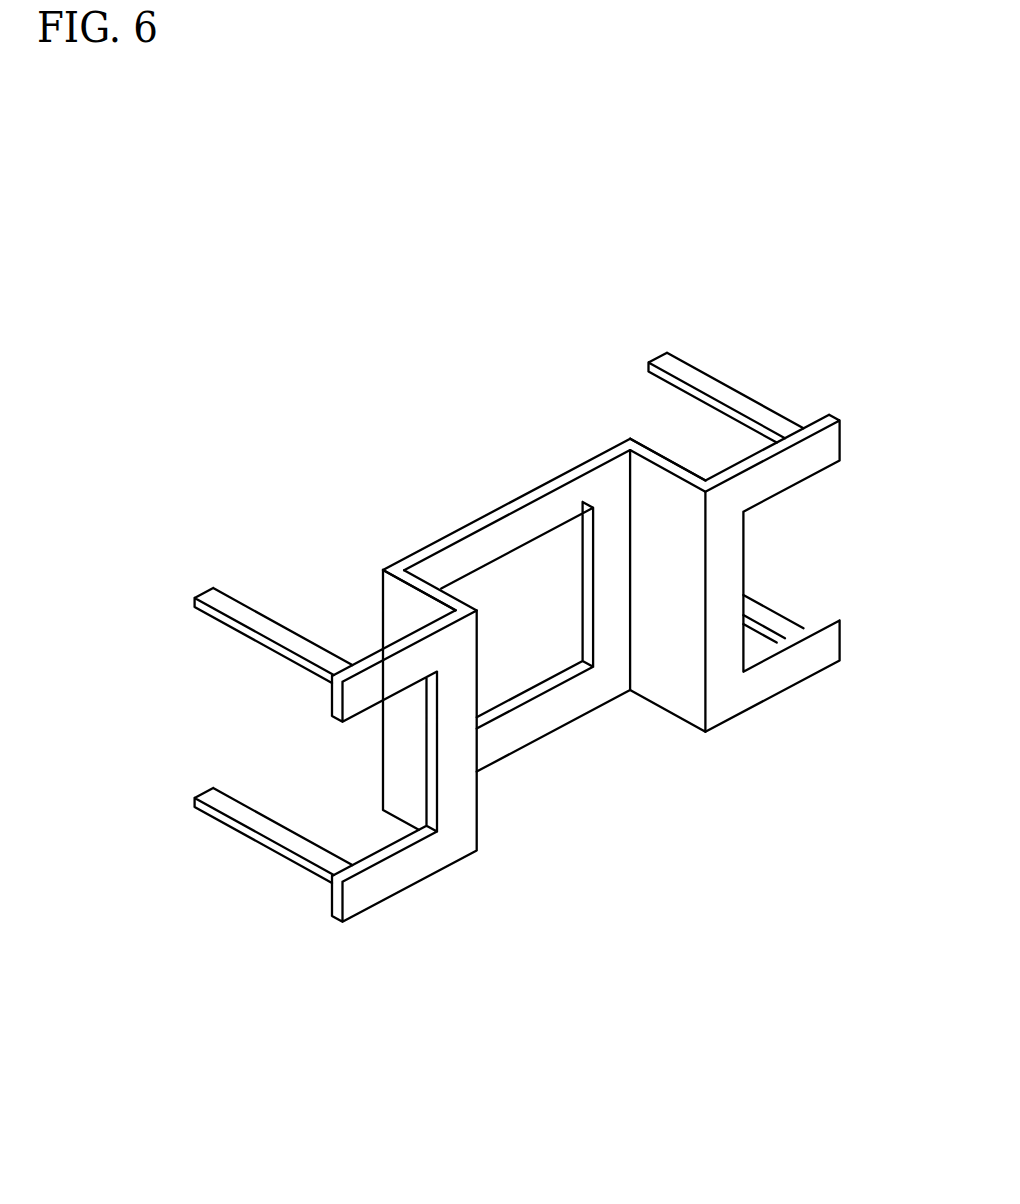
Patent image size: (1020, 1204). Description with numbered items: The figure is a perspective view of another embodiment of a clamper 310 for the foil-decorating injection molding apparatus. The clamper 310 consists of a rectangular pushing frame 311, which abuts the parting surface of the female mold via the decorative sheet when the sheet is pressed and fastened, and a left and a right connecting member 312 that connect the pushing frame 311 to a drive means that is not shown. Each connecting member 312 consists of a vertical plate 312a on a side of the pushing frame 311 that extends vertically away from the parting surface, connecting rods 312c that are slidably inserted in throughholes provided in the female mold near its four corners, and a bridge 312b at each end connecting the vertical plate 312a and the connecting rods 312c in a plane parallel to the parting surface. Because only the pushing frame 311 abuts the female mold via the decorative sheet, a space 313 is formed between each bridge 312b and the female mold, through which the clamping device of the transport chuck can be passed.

The clamper 310 is at (332, 444).
The pushing frame 311 is at (518, 523).
The connecting member 312 is at (503, 665).
The vertical plate 312a is at (403, 752).
The bridge 312b is at (437, 852).
The connecting rod 312c is at (237, 628).
The space 313 is at (676, 431).